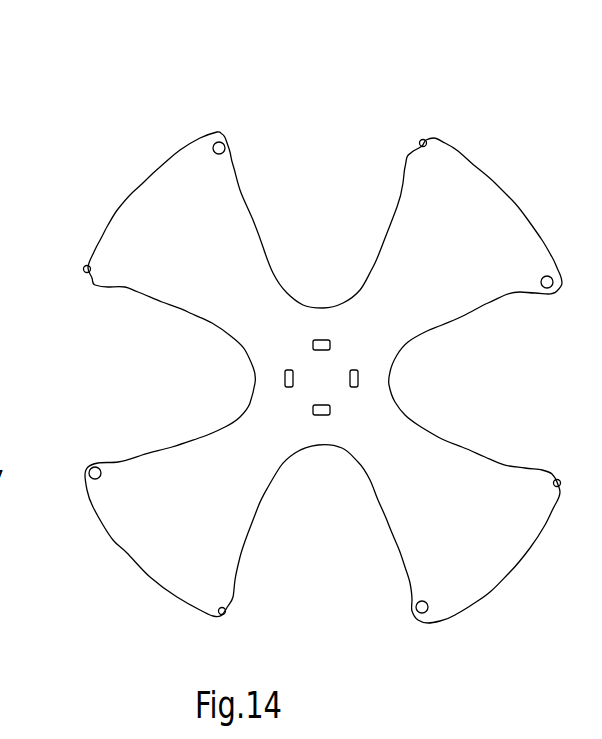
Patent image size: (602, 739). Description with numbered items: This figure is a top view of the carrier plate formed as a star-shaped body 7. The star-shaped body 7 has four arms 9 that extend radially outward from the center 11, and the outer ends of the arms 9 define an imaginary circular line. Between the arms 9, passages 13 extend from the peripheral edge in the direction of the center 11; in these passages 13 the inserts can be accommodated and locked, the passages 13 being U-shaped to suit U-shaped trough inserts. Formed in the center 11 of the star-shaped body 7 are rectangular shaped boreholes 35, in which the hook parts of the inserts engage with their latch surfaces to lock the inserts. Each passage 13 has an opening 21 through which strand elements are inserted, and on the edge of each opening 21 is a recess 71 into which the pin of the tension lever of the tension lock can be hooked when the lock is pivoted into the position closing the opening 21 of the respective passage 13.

The star-shaped body 7 is at (397, 305).
The arms 9 is at (165, 202).
The center 11 is at (315, 370).
The passages 13 is at (263, 247).
The opening 21 is at (237, 148).
The boreholes 35 is at (313, 343).
The recess 71 is at (420, 145).